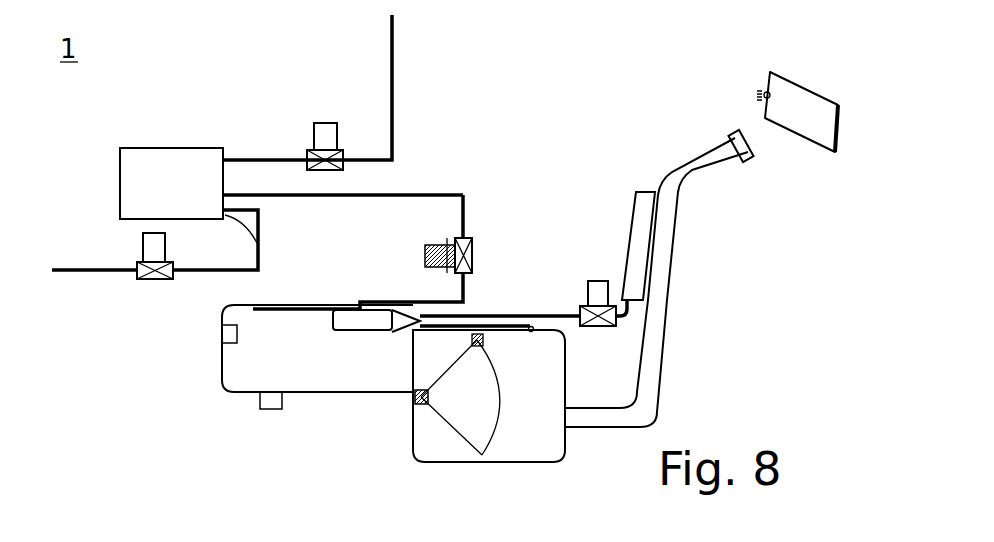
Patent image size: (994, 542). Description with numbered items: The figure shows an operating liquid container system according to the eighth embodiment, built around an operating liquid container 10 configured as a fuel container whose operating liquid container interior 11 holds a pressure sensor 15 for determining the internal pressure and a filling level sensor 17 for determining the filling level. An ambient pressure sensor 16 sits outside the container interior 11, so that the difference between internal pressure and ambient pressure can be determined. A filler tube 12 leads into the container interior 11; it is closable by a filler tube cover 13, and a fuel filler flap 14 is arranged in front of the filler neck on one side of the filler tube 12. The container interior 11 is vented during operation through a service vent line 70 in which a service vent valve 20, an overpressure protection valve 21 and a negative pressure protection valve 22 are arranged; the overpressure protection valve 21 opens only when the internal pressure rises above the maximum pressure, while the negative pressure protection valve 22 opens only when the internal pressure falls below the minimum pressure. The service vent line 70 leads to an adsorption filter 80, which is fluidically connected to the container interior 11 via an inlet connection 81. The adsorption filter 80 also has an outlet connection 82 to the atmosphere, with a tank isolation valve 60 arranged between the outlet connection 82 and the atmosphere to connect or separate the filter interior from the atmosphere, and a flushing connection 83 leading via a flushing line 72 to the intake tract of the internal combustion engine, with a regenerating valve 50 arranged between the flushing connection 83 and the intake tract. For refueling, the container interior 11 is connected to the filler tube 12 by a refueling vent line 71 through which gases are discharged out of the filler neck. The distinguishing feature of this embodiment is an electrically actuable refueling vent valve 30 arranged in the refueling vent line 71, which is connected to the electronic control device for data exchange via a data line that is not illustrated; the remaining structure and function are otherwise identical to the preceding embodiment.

The operating liquid container 10 is at (212, 420).
The operating liquid container interior 11 is at (222, 372).
The filler tube 12 is at (663, 255).
The filler tube cover 13 is at (752, 148).
The fuel filler flap 14 is at (805, 108).
The pressure sensor 15 is at (222, 334).
The ambient pressure sensor 16 is at (270, 410).
The filling level sensor 17 is at (414, 402).
The service vent valve 20 is at (476, 250).
The overpressure protection valve 21 is at (447, 240).
The negative pressure protection valve 22 is at (425, 252).
The refueling vent valve 30 is at (597, 330).
The regenerating valve 50 is at (152, 280).
The tank isolation valve 60 is at (330, 172).
The service vent line 70 is at (440, 192).
The refueling vent line 71 is at (645, 190).
The flushing line 72 is at (86, 273).
The adsorption filter 80 is at (177, 165).
The inlet connection 81 is at (226, 192).
The outlet connection 82 is at (226, 155).
The flushing connection 83 is at (260, 248).